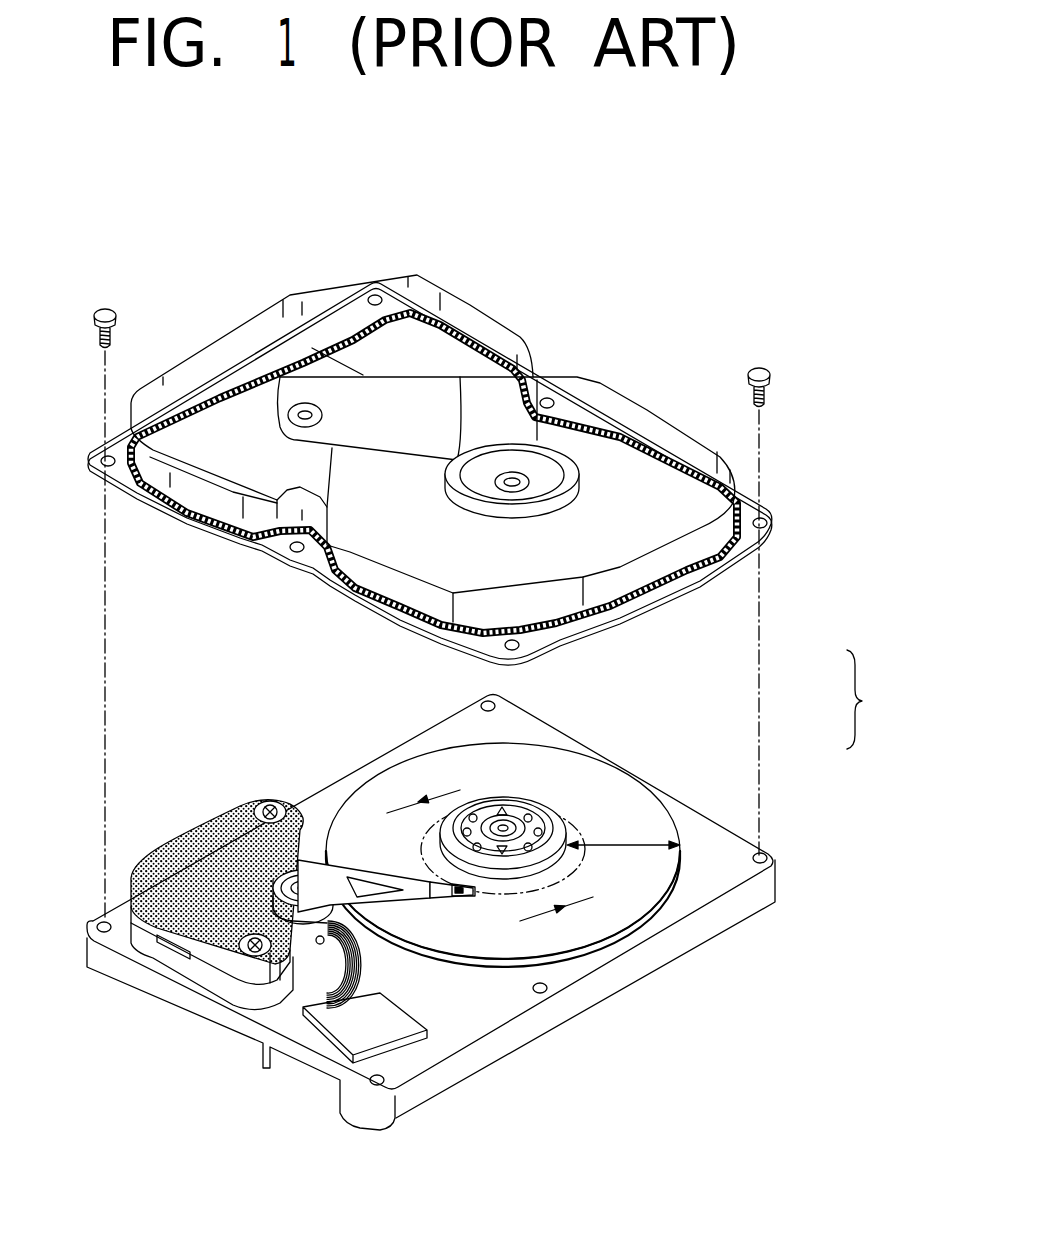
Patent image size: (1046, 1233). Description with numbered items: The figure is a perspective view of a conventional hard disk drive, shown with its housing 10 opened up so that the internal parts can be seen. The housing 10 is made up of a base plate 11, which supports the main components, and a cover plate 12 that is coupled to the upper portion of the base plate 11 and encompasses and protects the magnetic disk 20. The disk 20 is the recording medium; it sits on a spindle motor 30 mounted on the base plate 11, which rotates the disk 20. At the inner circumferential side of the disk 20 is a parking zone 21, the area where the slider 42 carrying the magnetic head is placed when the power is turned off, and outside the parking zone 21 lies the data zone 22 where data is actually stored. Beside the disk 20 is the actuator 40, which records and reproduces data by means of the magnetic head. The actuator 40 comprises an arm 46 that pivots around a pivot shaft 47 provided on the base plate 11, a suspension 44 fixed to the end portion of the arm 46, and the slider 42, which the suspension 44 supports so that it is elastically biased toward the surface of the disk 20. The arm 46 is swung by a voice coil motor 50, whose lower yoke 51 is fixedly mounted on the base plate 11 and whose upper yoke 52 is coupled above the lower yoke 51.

The housing 10 is at (873, 699).
The base plate 11 is at (730, 852).
The cover plate 12 is at (727, 563).
The magnetic disk 20 is at (410, 778).
The parking zone 21 is at (587, 848).
The data zone 22 is at (630, 845).
The spindle motor 30 is at (538, 797).
The actuator 40 is at (342, 852).
The slider 42 is at (473, 900).
The suspension 44 is at (453, 900).
The arm 46 is at (397, 902).
The pivot shaft 47 is at (268, 797).
The voice coil motor 50 is at (142, 940).
The lower yoke 51 is at (227, 997).
The upper yoke 52 is at (207, 957).